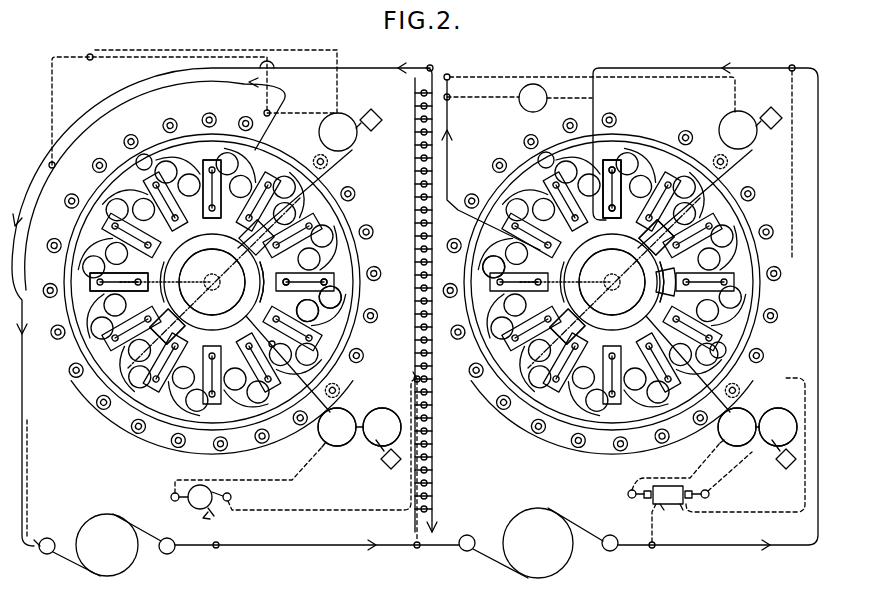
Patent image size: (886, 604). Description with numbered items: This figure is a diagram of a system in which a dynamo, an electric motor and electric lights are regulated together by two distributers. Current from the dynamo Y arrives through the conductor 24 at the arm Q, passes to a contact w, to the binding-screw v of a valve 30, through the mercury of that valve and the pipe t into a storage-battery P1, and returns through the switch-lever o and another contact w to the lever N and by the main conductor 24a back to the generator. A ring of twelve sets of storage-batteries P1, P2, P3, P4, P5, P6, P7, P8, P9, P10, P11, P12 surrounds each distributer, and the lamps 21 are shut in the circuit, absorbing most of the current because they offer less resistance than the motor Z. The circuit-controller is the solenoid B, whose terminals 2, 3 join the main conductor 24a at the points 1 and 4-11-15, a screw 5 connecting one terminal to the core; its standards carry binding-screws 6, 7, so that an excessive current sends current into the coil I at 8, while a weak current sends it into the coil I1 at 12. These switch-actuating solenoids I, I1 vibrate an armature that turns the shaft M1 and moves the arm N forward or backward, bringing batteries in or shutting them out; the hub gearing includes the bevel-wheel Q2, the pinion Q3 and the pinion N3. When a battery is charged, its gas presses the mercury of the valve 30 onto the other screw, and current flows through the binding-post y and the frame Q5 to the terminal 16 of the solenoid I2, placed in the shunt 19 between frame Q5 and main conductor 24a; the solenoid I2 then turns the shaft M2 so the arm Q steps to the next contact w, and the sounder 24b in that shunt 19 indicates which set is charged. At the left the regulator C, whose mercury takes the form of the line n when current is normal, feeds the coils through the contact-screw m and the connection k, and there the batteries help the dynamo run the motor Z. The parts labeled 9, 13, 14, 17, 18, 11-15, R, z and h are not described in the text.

The connection point 1 is at (652, 533).
The terminal 2 is at (665, 509).
The terminal 3 is at (682, 509).
The main-conductor connection 4-11-15 is at (789, 154).
The screw 5 is at (648, 503).
The binding-screw 6 is at (674, 479).
The binding-screw 7 is at (745, 446).
The coil terminal 8 is at (518, 440).
The conductor 9 is at (345, 418).
The conductors 11-15 is at (403, 356).
The coil terminal 12 is at (385, 420).
The conductor 13 is at (785, 412).
The conductor 14 is at (221, 303).
The terminal 16 is at (415, 91).
The armature 17 is at (560, 114).
The conductor 18 is at (317, 551).
The shunt branch 19 is at (192, 111).
The lamps 21 is at (415, 298).
The conductor 24 is at (705, 300).
The main conductor 24a is at (36, 475).
The sounder 24b is at (518, 93).
The valve 30 is at (423, 275).
The solenoid B is at (668, 495).
The regulator C is at (200, 497).
The dynamo Y is at (538, 543).
The motor Z is at (107, 545).
The solenoid I is at (537, 427).
The coil I1 is at (576, 427).
The solenoid I2 is at (538, 131).
The shaft M1 is at (346, 392).
The shaft M2 is at (356, 155).
The arm N is at (220, 234).
The pinion N3 is at (242, 298).
The arm Q is at (156, 284).
The bevel-wheel Q2 is at (412, 282).
The pinion Q3 is at (244, 252).
The ratchet R is at (674, 266).
The storage-battery P1 is at (177, 111).
The storage-battery P2 is at (106, 174).
The storage-battery P3 is at (67, 203).
The storage-battery P4 is at (26, 290).
The storage-battery P5 is at (94, 396).
The storage-battery P6 is at (367, 442).
The storage-battery P7 is at (454, 446).
The storage-battery P8 is at (300, 432).
The storage-battery P9 is at (360, 354).
The storage-battery P10 is at (374, 238).
The storage-battery P11 is at (326, 164).
The storage-battery P12 is at (246, 118).
The frame Q5 is at (363, 192).
The pipe t is at (367, 280).
The binding-post y is at (54, 258).
The pivot z is at (431, 255).
The binding-screw v is at (353, 266).
The contact w is at (391, 278).
The switch-lever o is at (234, 272).
The line n is at (268, 344).
The contact-screw m is at (239, 476).
The connection k is at (316, 458).
The armature h is at (207, 520).